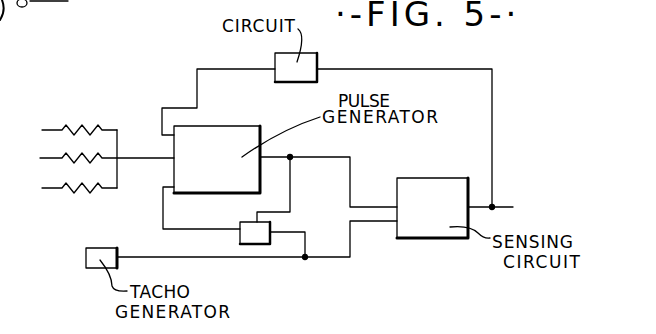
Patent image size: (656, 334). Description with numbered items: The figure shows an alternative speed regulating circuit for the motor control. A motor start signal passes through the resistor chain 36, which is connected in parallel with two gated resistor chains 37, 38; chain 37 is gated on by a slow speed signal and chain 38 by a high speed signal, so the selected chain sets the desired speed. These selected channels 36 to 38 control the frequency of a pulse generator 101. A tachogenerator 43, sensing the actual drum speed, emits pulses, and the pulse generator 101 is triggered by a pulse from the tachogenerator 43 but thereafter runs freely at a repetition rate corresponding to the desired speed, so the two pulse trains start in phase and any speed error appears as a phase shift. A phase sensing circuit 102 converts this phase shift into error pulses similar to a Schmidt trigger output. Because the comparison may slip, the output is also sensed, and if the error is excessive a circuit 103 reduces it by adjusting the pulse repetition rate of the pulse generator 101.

The resistor chain 36 is at (86, 124).
The gated resistor chain 37 is at (93, 158).
The gated resistor chain 38 is at (90, 190).
The tachogenerator 43 is at (110, 262).
The pulse generator 101 is at (242, 145).
The phase sensing circuit 102 is at (443, 200).
The circuit 103 is at (317, 65).